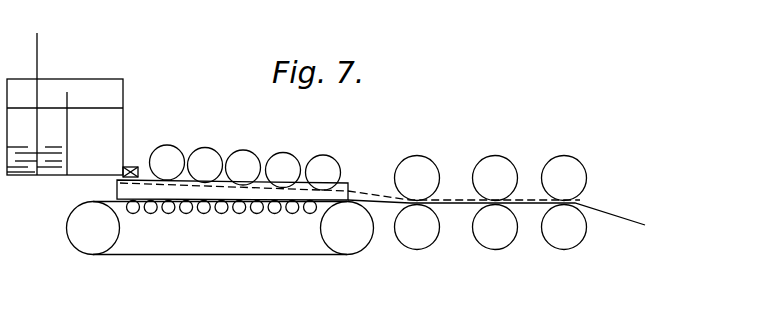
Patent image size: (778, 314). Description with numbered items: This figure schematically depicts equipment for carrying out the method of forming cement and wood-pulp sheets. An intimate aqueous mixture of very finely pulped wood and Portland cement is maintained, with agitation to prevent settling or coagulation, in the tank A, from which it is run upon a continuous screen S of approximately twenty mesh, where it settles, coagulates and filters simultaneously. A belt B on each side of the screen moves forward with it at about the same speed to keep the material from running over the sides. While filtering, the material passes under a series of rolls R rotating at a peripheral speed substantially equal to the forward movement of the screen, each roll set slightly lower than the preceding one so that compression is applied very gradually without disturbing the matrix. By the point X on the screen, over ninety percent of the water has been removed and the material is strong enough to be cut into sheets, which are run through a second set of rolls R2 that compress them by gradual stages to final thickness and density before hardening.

The tank A is at (65, 104).
The belt B is at (146, 190).
The rolls R is at (245, 167).
The point on the screen X is at (348, 186).
The second set of rolls R2 is at (491, 203).
The continuous screen S is at (120, 203).